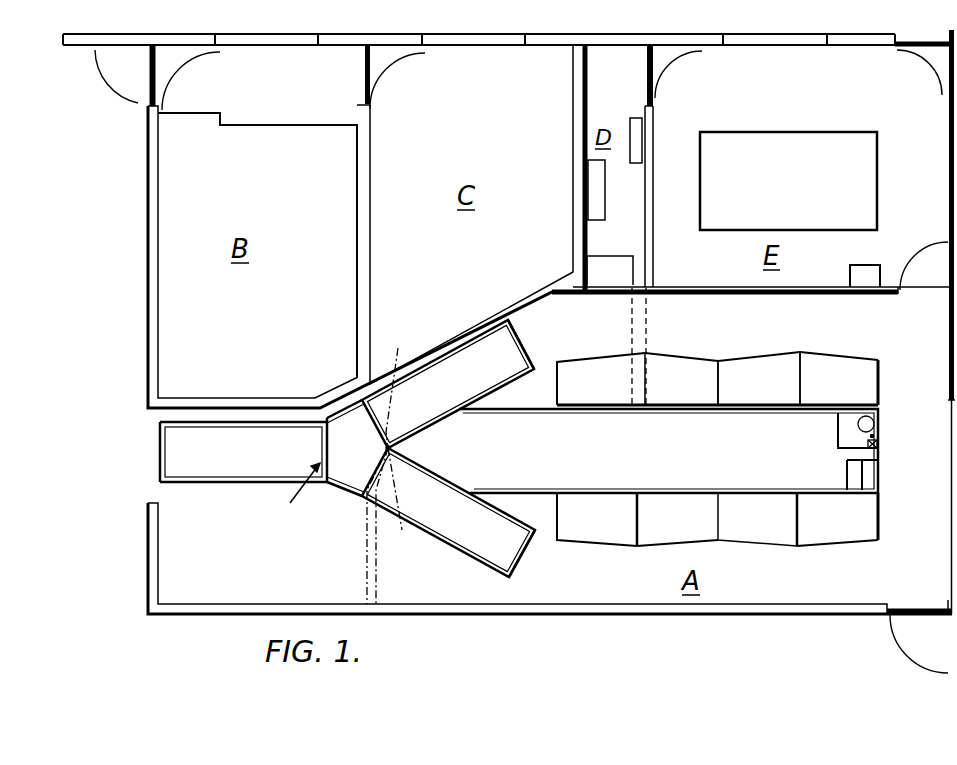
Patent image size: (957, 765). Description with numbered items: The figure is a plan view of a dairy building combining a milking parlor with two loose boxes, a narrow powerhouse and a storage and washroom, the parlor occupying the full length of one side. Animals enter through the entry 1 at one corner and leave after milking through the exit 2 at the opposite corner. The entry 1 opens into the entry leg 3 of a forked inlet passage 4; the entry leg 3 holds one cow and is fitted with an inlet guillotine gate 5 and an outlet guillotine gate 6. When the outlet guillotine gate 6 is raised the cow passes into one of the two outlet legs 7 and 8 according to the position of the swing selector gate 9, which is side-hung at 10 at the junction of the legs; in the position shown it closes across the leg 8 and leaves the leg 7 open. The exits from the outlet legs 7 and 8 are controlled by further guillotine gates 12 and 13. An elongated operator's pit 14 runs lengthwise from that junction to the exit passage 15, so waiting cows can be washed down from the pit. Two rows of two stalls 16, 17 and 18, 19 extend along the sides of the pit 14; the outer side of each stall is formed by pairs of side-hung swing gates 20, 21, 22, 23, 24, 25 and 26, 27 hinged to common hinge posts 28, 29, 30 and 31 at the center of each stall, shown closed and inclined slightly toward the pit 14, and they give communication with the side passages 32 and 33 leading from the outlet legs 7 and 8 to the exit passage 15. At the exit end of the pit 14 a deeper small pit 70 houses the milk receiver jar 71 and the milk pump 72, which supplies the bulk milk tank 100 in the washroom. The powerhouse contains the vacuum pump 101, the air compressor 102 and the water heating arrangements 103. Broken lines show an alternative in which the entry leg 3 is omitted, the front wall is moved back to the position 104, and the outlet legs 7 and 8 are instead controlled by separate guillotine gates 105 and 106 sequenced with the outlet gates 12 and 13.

The entry 1 is at (156, 462).
The exit 2 is at (906, 618).
The entry leg 3 is at (243, 460).
The forked inlet passage 4 is at (296, 495).
The inlet guillotine gate 5 is at (160, 440).
The outlet guillotine gate 6 is at (325, 456).
The outlet leg 7 is at (451, 385).
The outlet leg 8 is at (436, 517).
The swing selector gate 9 is at (360, 462).
The hinge point 10 is at (393, 448).
The guillotine gate 12 is at (522, 337).
The guillotine gate 13 is at (515, 580).
The operator's pit 14 is at (704, 463).
The exit passage 15 is at (930, 493).
The stall 16 is at (695, 391).
The stall 17 is at (853, 391).
The stall 18 is at (608, 531).
The stall 19 is at (849, 531).
The swing gate 20 is at (590, 362).
The swing gate 21 is at (672, 352).
The swing gate 22 is at (746, 352).
The swing gate 23 is at (836, 352).
The swing gate 24 is at (576, 542).
The swing gate 25 is at (660, 545).
The swing gate 26 is at (737, 545).
The swing gate 27 is at (826, 545).
The hinge post 28 is at (634, 348).
The hinge post 29 is at (800, 352).
The hinge post 30 is at (637, 548).
The hinge post 31 is at (797, 547).
The side passage 32 is at (727, 329).
The side passage 33 is at (732, 587).
The deeper small pit 70 is at (878, 417).
The milk receiver jar 71 is at (876, 426).
The milk pump 72 is at (879, 441).
The bulk milk tank 100 is at (775, 145).
The vacuum pump 101 is at (630, 128).
The air compressor 102 is at (600, 193).
The water heating arrangements 103 is at (618, 248).
The moved-back front parlor wall position 104 is at (362, 568).
The guillotine gate 105 is at (394, 358).
The guillotine gate 106 is at (388, 522).